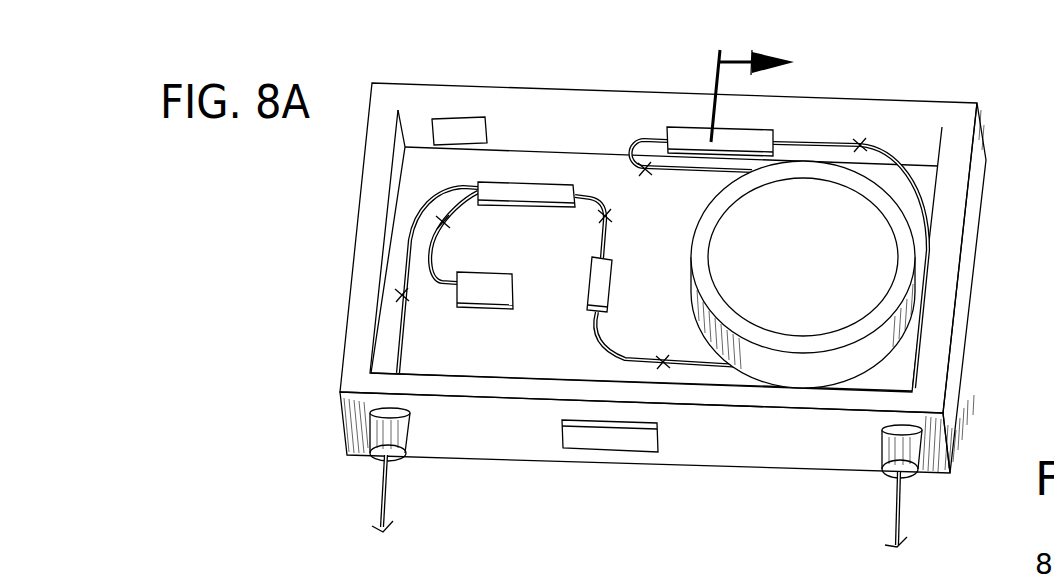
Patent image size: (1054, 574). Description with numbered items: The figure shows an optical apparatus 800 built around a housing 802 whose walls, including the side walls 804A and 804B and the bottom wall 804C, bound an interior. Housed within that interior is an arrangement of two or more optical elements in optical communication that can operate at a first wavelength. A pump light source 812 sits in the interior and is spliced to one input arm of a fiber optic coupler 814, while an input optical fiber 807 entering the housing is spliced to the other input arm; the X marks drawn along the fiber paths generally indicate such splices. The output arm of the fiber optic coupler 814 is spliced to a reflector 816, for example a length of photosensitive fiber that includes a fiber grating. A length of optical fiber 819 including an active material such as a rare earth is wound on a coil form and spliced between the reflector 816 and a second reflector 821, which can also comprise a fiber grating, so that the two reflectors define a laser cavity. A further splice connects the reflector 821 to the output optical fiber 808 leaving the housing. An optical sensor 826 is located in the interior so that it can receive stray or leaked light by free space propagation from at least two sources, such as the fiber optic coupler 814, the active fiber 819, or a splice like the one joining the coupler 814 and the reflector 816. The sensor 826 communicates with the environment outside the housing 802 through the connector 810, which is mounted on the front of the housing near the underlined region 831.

The optical apparatus 800 is at (413, 53).
The housing 802 is at (358, 317).
The side wall 804A is at (388, 233).
The side wall 804B is at (560, 128).
The bottom wall 804C is at (690, 221).
The optical sensor 826 is at (467, 135).
The second reflector 821 is at (755, 145).
The fiber optic coupler 814 is at (517, 195).
The pump light source 812 is at (482, 295).
The reflector 816 is at (605, 275).
The length of optical fiber 819 is at (888, 295).
The connector 810 is at (658, 430).
The front wall 831 is at (752, 458).
The input optical fiber 807 is at (378, 507).
The output optical fiber 808 is at (892, 522).